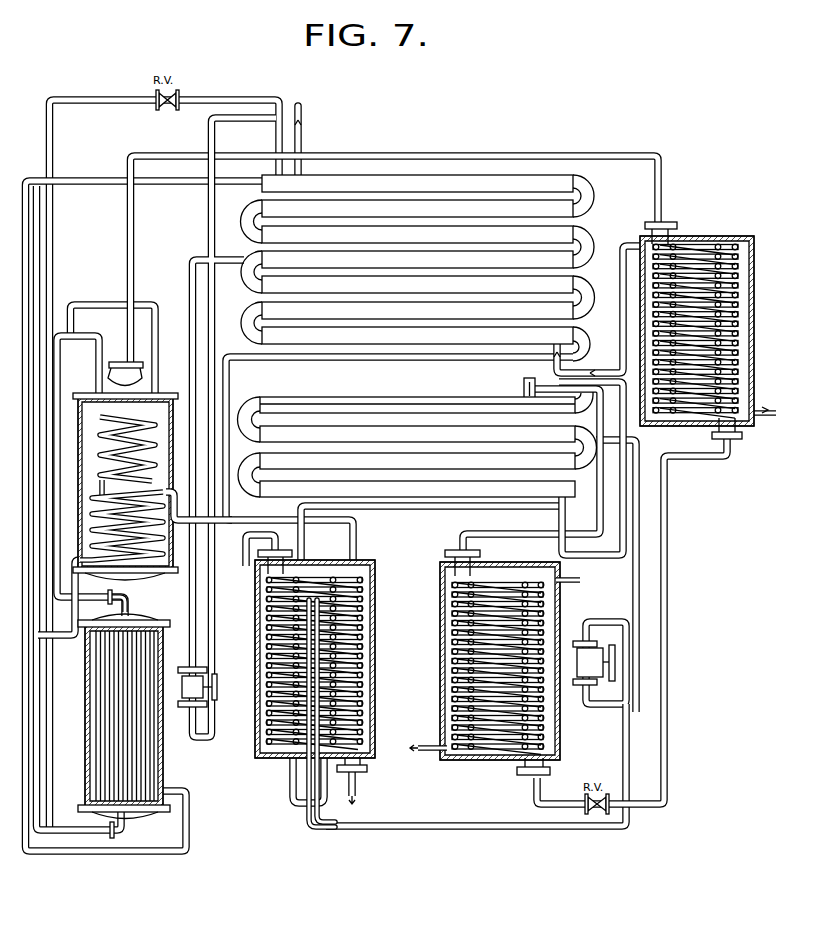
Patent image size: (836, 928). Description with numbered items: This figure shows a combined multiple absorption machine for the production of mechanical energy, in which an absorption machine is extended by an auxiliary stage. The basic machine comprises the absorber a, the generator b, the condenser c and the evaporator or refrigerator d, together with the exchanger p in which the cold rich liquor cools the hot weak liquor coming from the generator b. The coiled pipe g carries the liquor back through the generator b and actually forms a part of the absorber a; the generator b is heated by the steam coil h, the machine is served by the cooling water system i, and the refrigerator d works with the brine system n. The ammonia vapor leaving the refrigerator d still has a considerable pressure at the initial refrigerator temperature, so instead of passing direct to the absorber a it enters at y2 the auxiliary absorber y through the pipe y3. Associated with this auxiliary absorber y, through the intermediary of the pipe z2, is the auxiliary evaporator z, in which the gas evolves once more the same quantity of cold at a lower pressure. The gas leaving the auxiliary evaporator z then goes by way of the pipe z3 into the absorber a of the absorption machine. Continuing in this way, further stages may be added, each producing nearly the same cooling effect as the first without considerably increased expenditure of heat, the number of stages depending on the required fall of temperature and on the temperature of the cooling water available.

The absorber a is at (447, 185).
The generator b is at (176, 406).
The condenser c is at (703, 246).
The evaporator or refrigerator d is at (510, 590).
The coiled pipe g is at (150, 428).
The steam coil h is at (170, 500).
The cooling water system i is at (622, 266).
The brine system n is at (356, 763).
The exchanger p is at (165, 757).
The auxiliary absorber y is at (378, 408).
The inlet of auxiliary absorber y2 is at (526, 384).
The pipe to auxiliary absorber y3 is at (462, 548).
The auxiliary evaporator z is at (362, 578).
The pipe between auxiliary absorber and auxiliary evaporator z2 is at (411, 512).
The pipe from auxiliary evaporator z3 is at (214, 214).